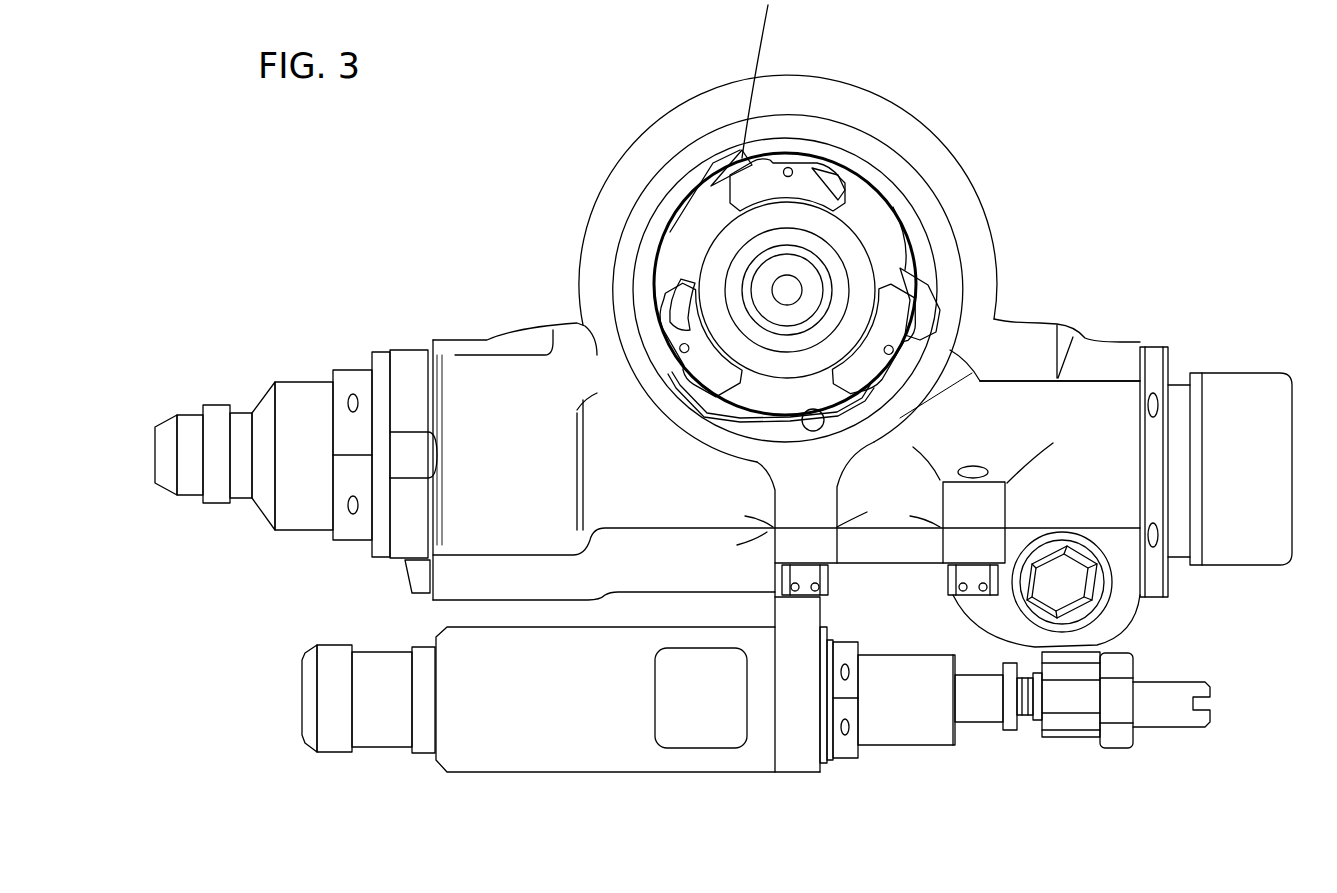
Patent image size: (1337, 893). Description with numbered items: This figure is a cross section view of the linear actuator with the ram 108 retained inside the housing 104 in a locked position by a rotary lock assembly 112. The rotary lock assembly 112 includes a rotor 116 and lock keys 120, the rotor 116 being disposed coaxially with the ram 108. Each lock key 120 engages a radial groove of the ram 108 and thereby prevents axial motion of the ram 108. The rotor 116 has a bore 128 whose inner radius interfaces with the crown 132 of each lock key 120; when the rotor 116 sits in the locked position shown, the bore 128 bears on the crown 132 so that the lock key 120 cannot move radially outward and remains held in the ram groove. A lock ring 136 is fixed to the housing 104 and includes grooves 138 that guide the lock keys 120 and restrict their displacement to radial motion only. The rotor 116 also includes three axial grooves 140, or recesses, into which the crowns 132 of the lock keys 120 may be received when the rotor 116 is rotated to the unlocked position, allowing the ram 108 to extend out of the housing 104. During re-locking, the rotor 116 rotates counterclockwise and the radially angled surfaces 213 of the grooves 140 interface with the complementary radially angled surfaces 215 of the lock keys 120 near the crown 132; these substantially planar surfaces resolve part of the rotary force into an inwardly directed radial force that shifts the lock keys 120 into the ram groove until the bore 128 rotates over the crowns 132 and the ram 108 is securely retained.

The housing 104 is at (872, 147).
The ram 108 is at (853, 255).
The rotary lock assembly 112 is at (648, 218).
The rotor 116 is at (690, 183).
The lock key 120 is at (807, 168).
The bore 128 is at (657, 343).
The crown 132 is at (678, 290).
The lock ring 136 is at (872, 212).
The grooves 138 is at (828, 160).
The axial grooves 140 is at (915, 297).
The radially angled surfaces 213 is at (735, 175).
The radially angled surfaces 215 is at (980, 381).